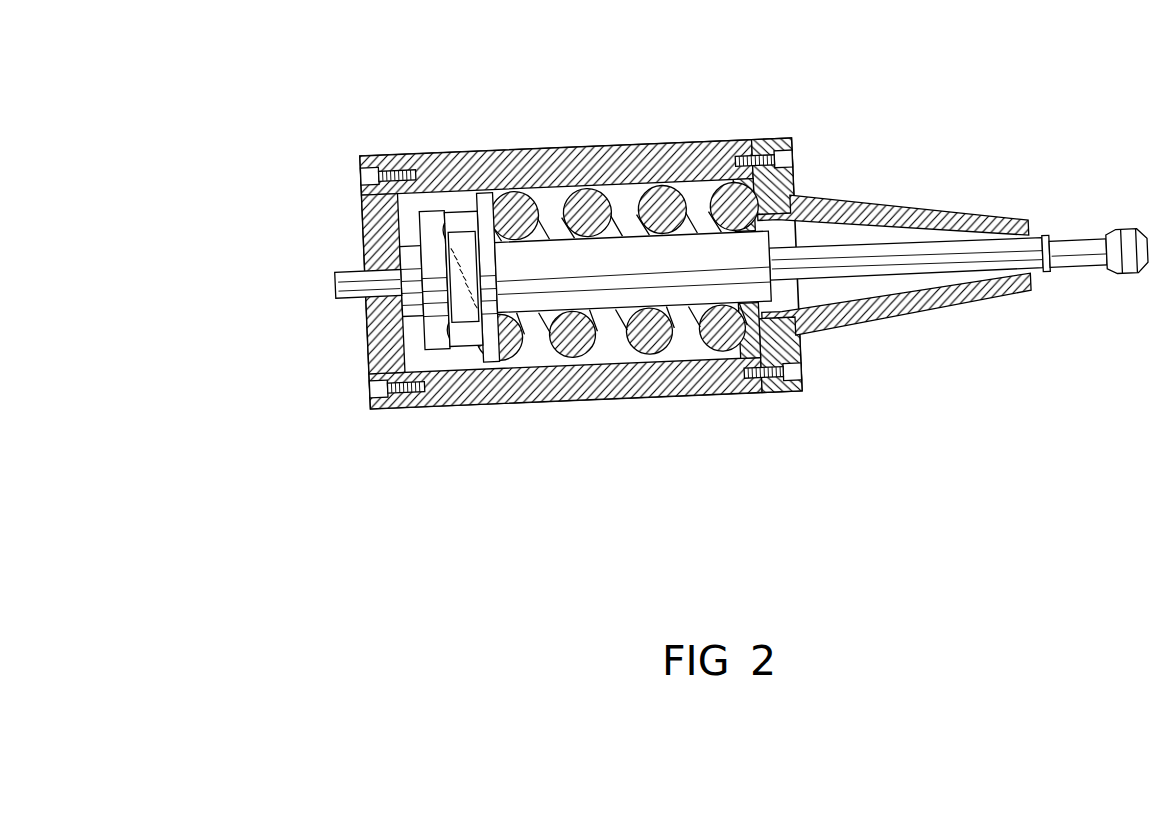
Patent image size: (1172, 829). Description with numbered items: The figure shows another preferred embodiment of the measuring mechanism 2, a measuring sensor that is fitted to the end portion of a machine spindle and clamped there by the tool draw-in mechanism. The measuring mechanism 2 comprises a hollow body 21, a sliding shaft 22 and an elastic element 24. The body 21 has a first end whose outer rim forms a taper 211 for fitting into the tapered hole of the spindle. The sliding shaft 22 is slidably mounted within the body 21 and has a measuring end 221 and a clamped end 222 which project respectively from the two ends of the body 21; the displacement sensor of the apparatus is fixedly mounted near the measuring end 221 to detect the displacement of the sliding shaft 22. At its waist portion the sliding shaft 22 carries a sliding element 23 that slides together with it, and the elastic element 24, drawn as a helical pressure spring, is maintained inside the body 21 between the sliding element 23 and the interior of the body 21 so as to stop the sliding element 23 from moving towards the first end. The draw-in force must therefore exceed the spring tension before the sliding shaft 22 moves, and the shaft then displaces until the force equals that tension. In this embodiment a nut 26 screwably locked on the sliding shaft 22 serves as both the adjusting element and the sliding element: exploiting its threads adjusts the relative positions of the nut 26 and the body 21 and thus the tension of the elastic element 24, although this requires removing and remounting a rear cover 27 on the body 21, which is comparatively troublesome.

The measuring mechanism 2 is at (603, 465).
The hollow body 21 is at (505, 150).
The taper 211 is at (913, 205).
The sliding shaft 22 is at (875, 262).
The measuring end 221 is at (333, 287).
The clamped end 222 is at (1128, 258).
The sliding element 23 is at (485, 210).
The elastic element 24 is at (600, 203).
The nut 26 is at (467, 335).
The rear cover 27 is at (377, 222).